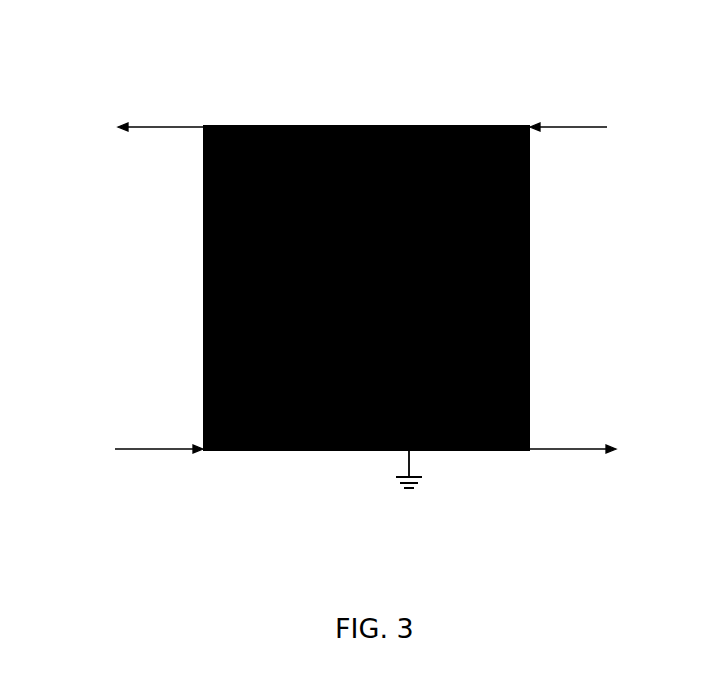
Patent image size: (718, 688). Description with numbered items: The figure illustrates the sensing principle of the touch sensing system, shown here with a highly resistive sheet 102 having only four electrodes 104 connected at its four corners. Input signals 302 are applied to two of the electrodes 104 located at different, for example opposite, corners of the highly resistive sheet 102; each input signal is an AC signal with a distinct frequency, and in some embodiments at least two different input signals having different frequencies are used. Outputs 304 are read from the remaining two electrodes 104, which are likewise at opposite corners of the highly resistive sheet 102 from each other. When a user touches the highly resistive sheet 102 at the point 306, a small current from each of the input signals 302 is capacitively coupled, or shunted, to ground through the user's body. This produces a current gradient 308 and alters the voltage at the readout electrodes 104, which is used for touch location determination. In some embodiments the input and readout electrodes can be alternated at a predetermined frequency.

The highly resistive sheet 102 is at (314, 116).
The electrodes 104 is at (207, 116).
The input signals 302 is at (567, 118).
The outputs 304 is at (155, 118).
The point 306 is at (523, 313).
The current gradient 308 is at (195, 285).